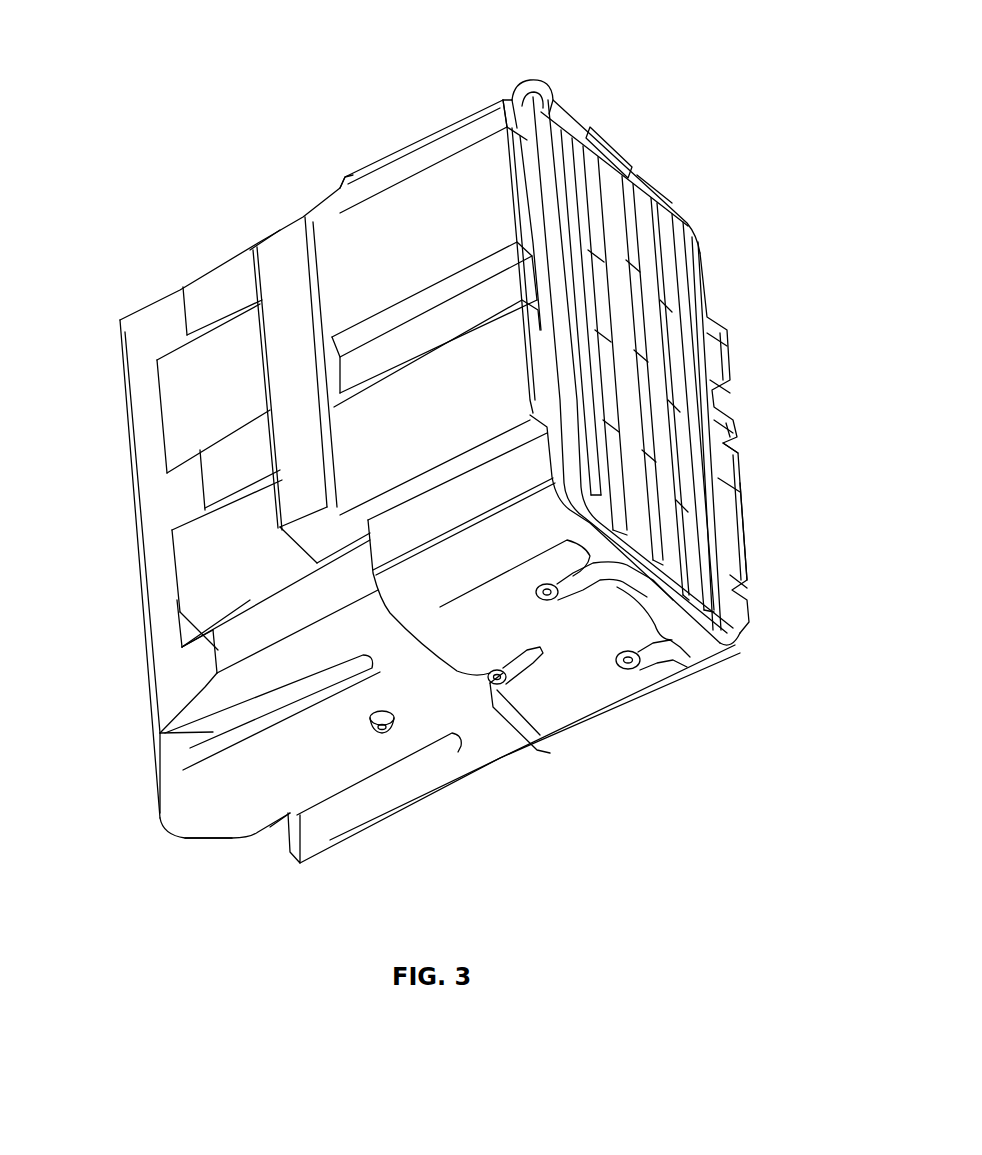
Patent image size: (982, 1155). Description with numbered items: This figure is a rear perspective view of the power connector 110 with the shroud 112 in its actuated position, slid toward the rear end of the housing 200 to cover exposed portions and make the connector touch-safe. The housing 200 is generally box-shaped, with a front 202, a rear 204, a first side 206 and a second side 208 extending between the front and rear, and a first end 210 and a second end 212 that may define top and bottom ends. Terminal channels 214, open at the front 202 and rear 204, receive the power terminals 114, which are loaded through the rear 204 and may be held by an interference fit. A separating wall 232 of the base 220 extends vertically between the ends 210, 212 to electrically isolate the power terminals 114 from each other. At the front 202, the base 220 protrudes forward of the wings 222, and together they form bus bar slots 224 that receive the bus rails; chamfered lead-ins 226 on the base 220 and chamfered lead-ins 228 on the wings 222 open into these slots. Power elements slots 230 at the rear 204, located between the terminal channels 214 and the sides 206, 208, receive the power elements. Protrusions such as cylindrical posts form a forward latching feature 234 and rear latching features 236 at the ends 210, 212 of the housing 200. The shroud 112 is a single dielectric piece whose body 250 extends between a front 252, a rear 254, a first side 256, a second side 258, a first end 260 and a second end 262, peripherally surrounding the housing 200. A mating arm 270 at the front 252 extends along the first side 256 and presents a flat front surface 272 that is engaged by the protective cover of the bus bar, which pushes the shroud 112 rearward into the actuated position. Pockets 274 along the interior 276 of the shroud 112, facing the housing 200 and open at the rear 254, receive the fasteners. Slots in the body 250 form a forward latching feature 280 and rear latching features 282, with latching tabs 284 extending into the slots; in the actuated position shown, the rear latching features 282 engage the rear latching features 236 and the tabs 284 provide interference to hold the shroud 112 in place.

The power connector 110 is at (347, 70).
The shroud 112 is at (580, 700).
The power terminals 114 is at (548, 370).
The housing 200 is at (447, 707).
The front 202 is at (167, 827).
The rear 204 is at (640, 547).
The first side 206 is at (521, 127).
The second side 208 is at (707, 267).
The first end 210 is at (597, 152).
The second end 212 is at (683, 675).
The terminal channels 214 is at (615, 215).
The base 220 is at (320, 760).
The wings 222 is at (160, 723).
The bus bar slots 224 is at (205, 745).
The chamfered lead-ins 226 is at (220, 837).
The chamfered lead-ins 228 is at (287, 840).
The power elements slots 230 is at (575, 178).
The separating wall 232 is at (652, 275).
The forward latching feature 234 is at (380, 735).
The rear latching features 236 is at (547, 603).
The body 250 is at (435, 152).
The front 252 is at (338, 190).
The rear 254 is at (540, 80).
The first side 256 is at (388, 218).
The second side 258 is at (727, 468).
The first end 260 is at (590, 127).
The second end 262 is at (587, 660).
The mating arm 270 is at (283, 290).
The flat front surface 272 is at (268, 390).
The pockets 274 is at (650, 357).
The interior 276 is at (737, 502).
The forward latching feature 280 is at (505, 690).
The rear latching features 282 is at (658, 668).
The latching tabs 284 is at (507, 690).